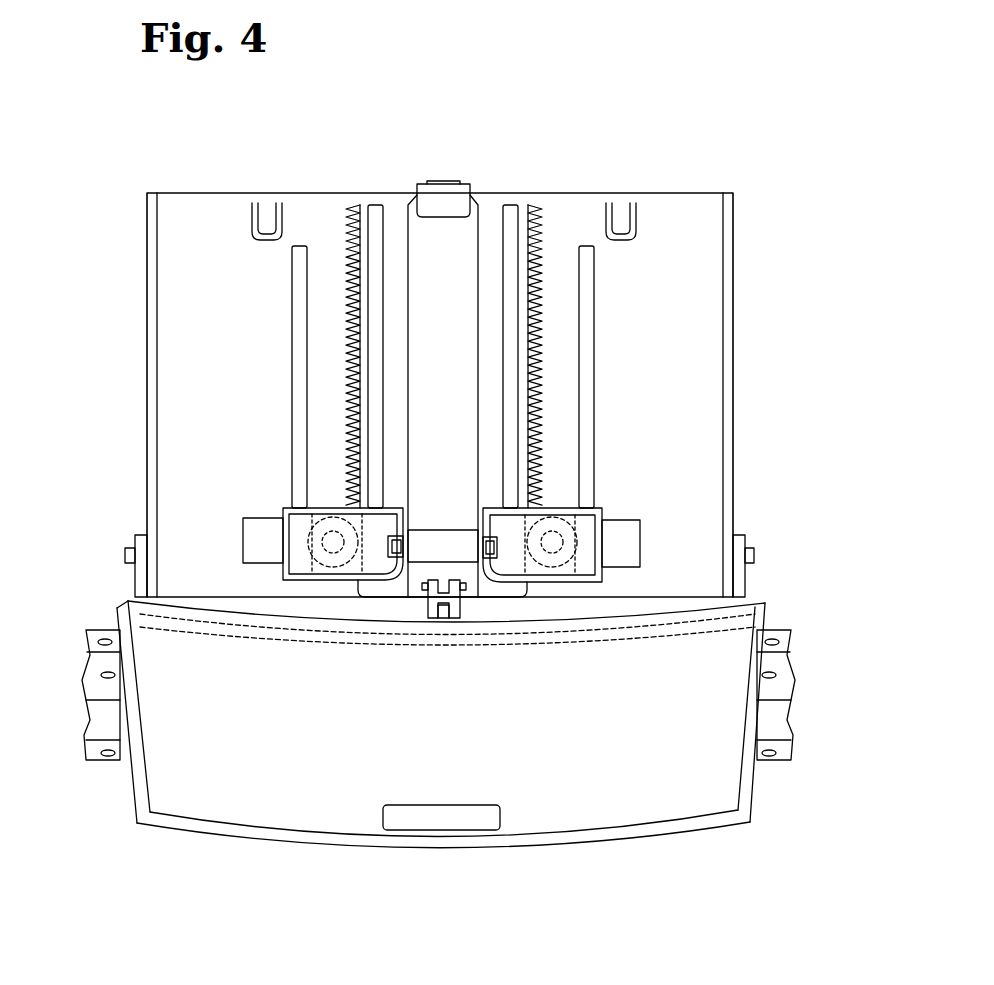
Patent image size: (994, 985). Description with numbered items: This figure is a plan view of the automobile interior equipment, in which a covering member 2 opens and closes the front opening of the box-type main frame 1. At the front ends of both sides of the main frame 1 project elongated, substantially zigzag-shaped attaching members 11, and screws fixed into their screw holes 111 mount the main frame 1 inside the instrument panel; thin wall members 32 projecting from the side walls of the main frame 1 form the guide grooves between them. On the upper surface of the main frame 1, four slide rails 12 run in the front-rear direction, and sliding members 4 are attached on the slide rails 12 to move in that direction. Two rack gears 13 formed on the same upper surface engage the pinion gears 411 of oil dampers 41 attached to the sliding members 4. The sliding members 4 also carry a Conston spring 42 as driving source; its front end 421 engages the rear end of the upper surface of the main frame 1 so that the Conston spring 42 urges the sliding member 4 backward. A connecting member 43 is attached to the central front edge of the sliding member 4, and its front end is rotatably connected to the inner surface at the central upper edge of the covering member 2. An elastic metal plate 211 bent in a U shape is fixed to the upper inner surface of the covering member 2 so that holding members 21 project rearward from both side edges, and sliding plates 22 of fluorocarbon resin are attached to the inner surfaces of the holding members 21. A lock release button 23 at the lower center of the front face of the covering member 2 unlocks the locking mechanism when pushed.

The box-type main frame 1 is at (682, 218).
The thin wall members 32 is at (152, 240).
The slide rails 12 is at (378, 247).
The rack gears 13 is at (343, 213).
The front end of the Conston spring 421 is at (444, 200).
The Conston spring 42 is at (443, 540).
The sliding members 4 is at (434, 496).
The oil dampers 41 is at (270, 515).
The pinion gears 411 is at (333, 540).
The connecting member 43 is at (462, 612).
The holding members 21 is at (140, 583).
The sliding plates 22 is at (128, 540).
The covering member 2 is at (708, 783).
The elastic metal plate 211 is at (198, 597).
The lock release button 23 is at (448, 817).
The attaching members 11 is at (449, 702).
The screw holes 111 is at (110, 672).